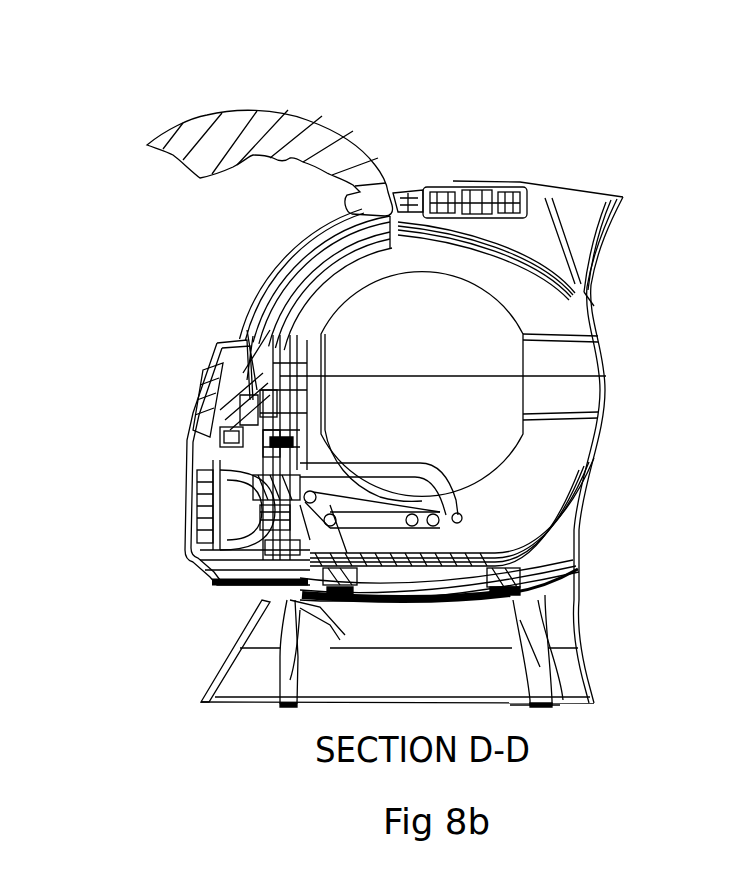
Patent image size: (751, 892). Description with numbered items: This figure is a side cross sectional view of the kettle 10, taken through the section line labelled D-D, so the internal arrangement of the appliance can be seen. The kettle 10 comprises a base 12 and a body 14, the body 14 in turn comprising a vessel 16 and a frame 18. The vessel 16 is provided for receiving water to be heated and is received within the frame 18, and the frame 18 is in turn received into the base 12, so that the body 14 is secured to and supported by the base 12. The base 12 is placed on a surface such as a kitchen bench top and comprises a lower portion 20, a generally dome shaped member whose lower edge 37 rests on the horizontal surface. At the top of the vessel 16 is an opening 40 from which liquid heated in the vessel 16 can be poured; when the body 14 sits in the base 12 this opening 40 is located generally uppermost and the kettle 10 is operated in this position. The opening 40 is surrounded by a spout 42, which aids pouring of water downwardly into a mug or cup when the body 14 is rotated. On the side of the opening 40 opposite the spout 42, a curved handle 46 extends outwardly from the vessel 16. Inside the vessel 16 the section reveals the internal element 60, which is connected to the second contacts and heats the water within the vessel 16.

The kettle 10 is at (130, 240).
The base 12 is at (210, 675).
The body 14 is at (622, 320).
The vessel 16 is at (606, 397).
The frame 18 is at (548, 548).
The lower portion 20 is at (265, 682).
The lower edge 37 is at (517, 707).
The opening 40 is at (583, 223).
The spout 42 is at (625, 197).
The handle 46 is at (216, 136).
The internal element 60 is at (403, 462).